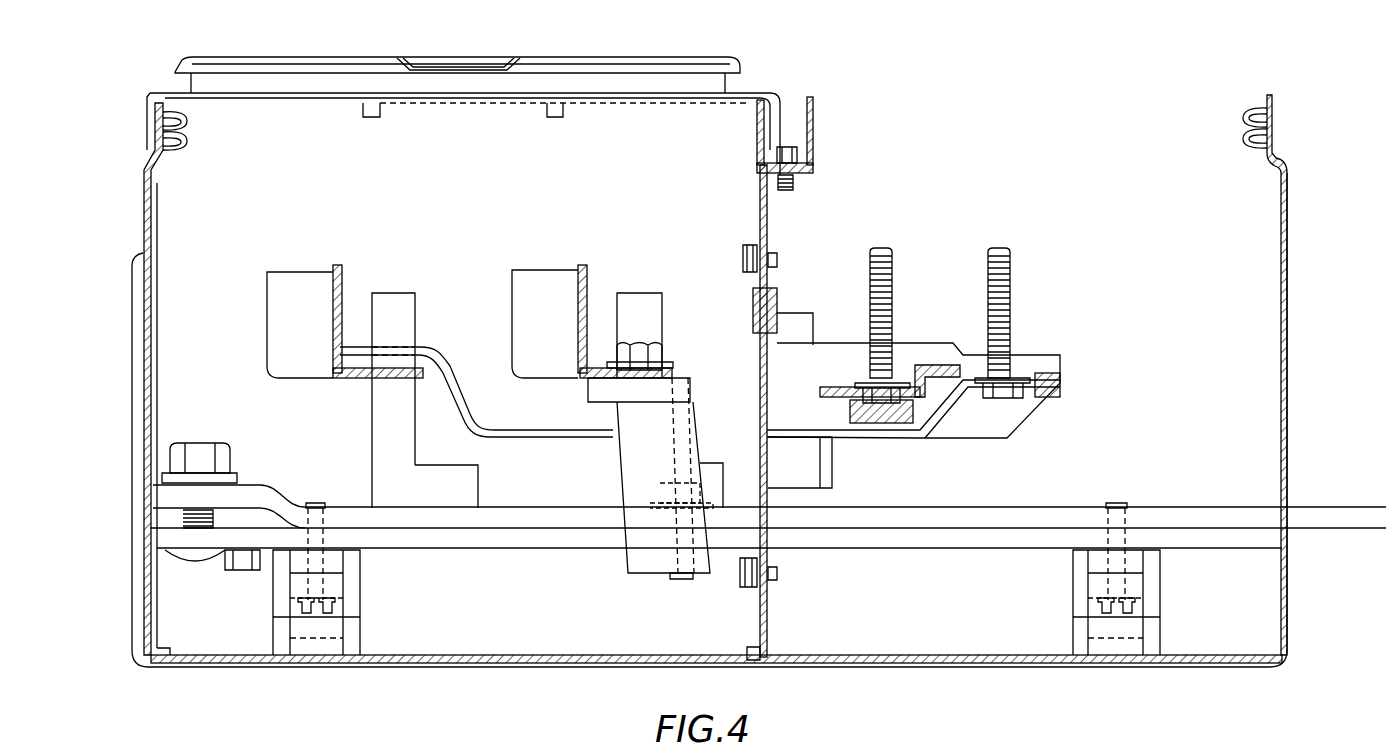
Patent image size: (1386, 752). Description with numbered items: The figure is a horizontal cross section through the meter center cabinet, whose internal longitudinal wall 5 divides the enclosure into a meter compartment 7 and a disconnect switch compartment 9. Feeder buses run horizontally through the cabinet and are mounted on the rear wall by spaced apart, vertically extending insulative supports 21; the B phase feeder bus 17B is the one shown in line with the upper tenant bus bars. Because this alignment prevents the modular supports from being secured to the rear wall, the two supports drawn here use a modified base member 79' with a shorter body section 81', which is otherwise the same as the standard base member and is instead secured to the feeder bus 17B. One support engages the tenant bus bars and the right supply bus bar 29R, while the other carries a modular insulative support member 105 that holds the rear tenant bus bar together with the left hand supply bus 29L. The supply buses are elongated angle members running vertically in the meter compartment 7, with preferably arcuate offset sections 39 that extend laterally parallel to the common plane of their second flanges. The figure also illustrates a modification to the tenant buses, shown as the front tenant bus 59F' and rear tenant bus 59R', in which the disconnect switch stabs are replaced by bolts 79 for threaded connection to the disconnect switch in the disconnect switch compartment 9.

The internal longitudinal wall 5 is at (768, 228).
The meter compartment 7 is at (600, 125).
The disconnect switch compartment 9 is at (1075, 152).
The B phase feeder bus 17B is at (1062, 506).
The insulative support 21 is at (362, 594).
The left hand supply bus 29L is at (330, 247).
The right supply bus bar 29R is at (595, 251).
The offset section 39 is at (512, 293).
The front tenant bus 59F' is at (918, 363).
The rear tenant bus 59R' is at (913, 442).
The bolt 79 is at (942, 324).
The modified base member 79' is at (393, 506).
The shorter body section 81' is at (583, 462).
The modular insulative support member 105 is at (412, 316).